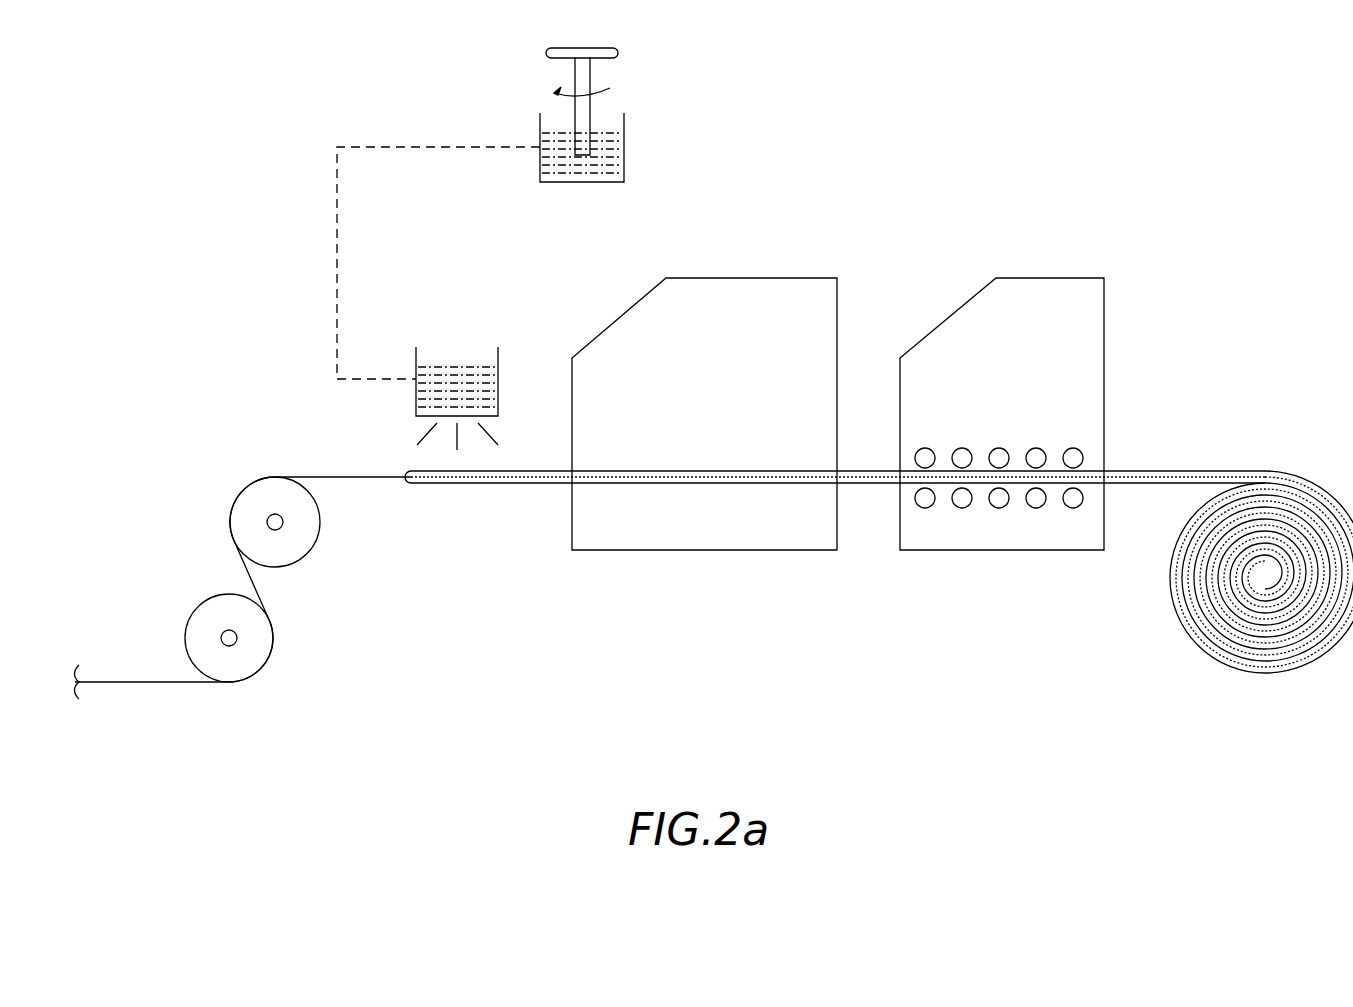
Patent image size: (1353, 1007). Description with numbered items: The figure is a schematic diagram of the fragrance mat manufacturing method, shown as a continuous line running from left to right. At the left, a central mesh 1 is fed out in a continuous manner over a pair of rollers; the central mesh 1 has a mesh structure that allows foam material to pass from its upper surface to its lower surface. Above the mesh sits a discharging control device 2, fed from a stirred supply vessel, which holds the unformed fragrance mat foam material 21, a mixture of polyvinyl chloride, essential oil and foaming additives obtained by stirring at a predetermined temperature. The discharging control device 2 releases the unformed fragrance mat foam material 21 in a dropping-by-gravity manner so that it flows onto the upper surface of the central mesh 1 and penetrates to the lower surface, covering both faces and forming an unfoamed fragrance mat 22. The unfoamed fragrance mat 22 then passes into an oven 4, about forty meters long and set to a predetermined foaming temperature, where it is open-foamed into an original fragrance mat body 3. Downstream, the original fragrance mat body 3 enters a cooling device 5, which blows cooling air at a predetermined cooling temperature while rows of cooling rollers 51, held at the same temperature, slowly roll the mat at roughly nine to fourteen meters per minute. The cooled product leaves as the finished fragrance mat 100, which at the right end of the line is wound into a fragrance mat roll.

The central mesh 1 is at (150, 684).
The discharging control device 2 is at (416, 404).
The unformed fragrance mat foam material 21 is at (608, 159).
The unfoamed fragrance mat 22 is at (443, 483).
The original fragrance mat body 3 is at (880, 483).
The oven 4 is at (742, 300).
The cooling device 5 is at (1040, 300).
The cooling roller 51 is at (962, 498).
The fragrance mat 100 is at (1150, 483).